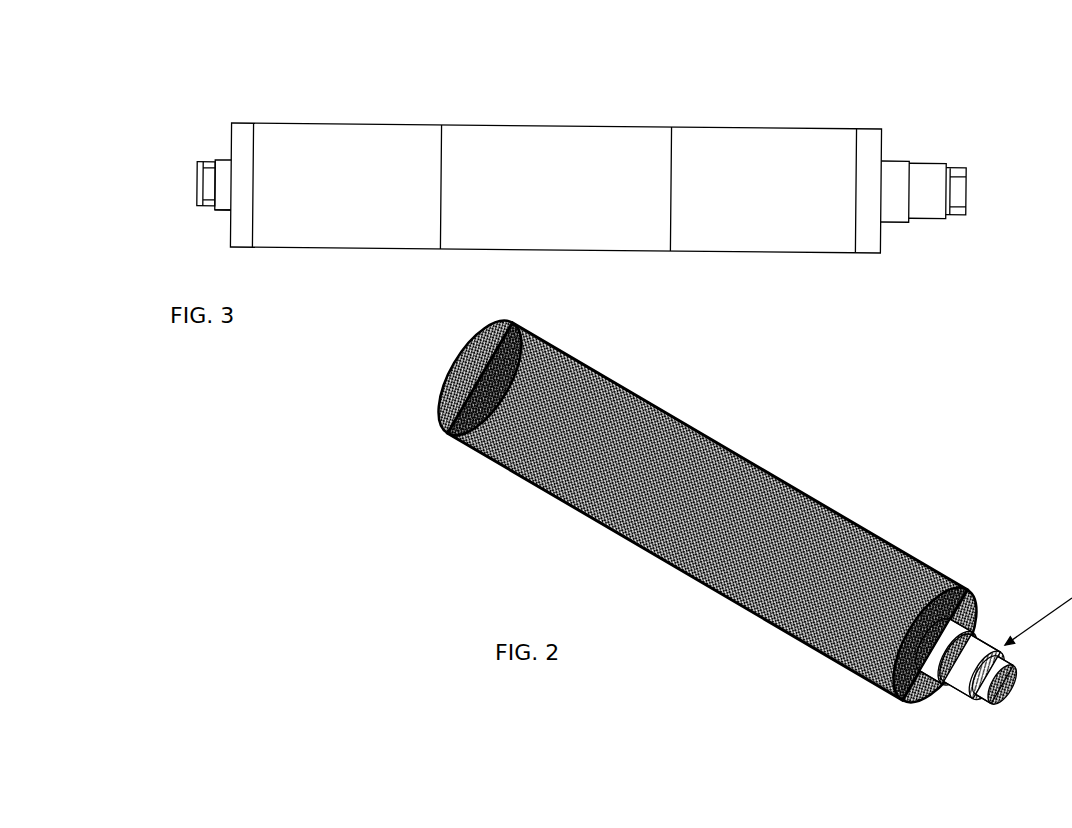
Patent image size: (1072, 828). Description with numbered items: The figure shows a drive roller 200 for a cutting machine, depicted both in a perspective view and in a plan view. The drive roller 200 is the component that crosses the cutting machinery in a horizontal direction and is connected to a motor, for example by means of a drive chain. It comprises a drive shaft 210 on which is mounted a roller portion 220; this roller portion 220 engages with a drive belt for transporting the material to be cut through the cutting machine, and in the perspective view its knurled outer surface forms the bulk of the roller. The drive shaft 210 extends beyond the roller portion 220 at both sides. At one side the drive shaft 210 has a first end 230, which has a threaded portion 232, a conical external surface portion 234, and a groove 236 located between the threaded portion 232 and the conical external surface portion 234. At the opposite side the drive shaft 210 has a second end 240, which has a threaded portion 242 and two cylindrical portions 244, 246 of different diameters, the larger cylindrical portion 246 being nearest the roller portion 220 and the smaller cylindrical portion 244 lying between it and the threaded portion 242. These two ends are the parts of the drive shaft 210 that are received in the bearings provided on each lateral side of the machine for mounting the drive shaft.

In FIG. 3, the drive roller 200 is at (593, 162).
In FIG. 2, the drive roller 200 is at (727, 504).
In FIG. 3, the drive shaft 210 is at (969, 185).
In FIG. 2, the drive shaft 210 is at (974, 645).
In FIG. 3, the roller portion 220 is at (543, 150).
In FIG. 2, the roller portion 220 is at (670, 567).
In FIG. 3, the first end 230 is at (221, 185).
In FIG. 2, the first end 230 is at (440, 352).
In FIG. 3, the threaded portion 232 is at (203, 204).
In FIG. 3, the conical external surface portion 234 is at (217, 165).
In FIG. 3, the groove 236 is at (218, 213).
In FIG. 3, the second end 240 is at (1004, 180).
In FIG. 3, the threaded portion 242 is at (963, 210).
In FIG. 2, the threaded portion 242 is at (995, 679).
In FIG. 3, the cylindrical portion 244 is at (927, 210).
In FIG. 2, the cylindrical portion 244 is at (972, 666).
In FIG. 3, the cylindrical portion 246 is at (893, 210).
In FIG. 2, the cylindrical portion 246 is at (946, 651).